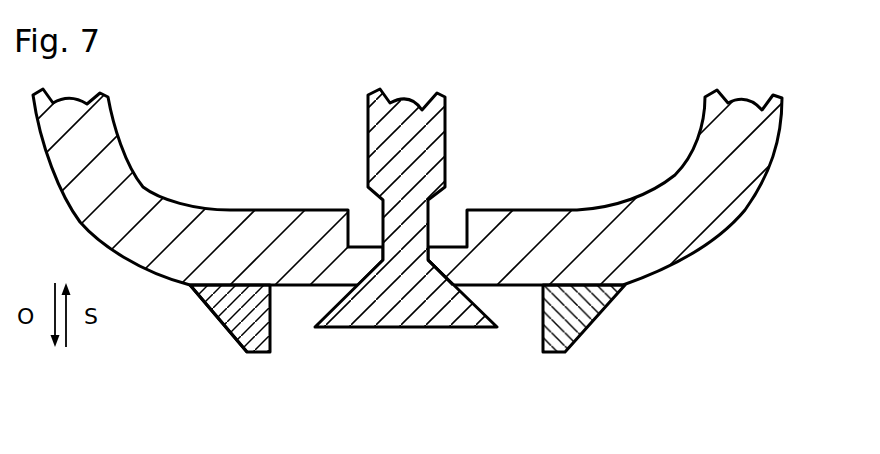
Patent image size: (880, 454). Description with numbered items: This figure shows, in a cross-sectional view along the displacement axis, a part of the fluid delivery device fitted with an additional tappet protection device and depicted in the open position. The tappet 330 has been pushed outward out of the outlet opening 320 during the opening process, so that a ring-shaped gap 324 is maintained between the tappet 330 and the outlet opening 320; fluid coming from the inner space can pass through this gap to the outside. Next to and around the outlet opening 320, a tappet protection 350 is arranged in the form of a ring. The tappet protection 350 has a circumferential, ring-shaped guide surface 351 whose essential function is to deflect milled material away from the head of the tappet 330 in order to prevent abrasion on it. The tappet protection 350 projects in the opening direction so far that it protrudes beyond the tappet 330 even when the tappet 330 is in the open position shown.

The outlet opening 320 is at (361, 203).
The ring-shaped gap 324 is at (463, 275).
The tappet 330 is at (473, 144).
The tappet protection 350 is at (267, 357).
The guide surface 351 is at (211, 308).